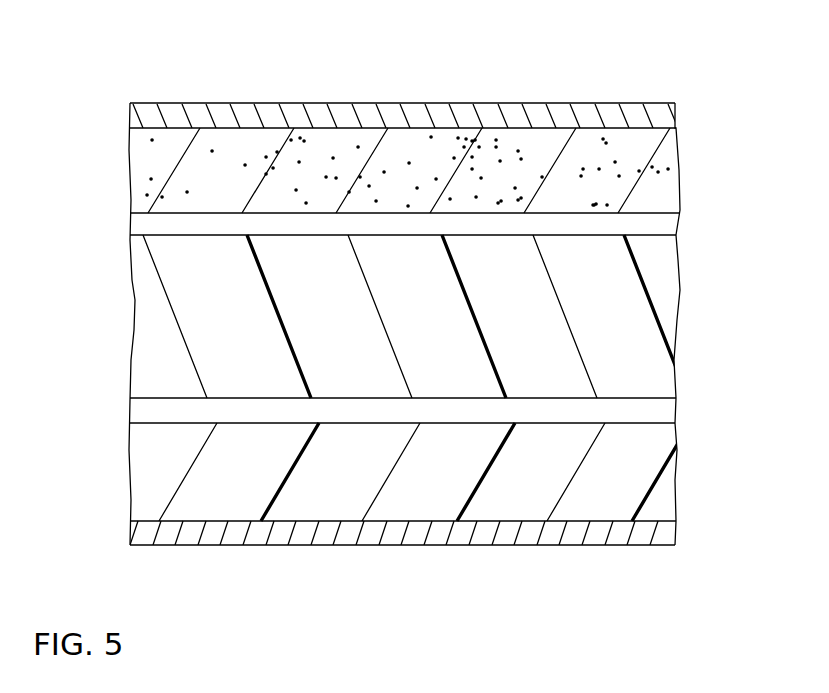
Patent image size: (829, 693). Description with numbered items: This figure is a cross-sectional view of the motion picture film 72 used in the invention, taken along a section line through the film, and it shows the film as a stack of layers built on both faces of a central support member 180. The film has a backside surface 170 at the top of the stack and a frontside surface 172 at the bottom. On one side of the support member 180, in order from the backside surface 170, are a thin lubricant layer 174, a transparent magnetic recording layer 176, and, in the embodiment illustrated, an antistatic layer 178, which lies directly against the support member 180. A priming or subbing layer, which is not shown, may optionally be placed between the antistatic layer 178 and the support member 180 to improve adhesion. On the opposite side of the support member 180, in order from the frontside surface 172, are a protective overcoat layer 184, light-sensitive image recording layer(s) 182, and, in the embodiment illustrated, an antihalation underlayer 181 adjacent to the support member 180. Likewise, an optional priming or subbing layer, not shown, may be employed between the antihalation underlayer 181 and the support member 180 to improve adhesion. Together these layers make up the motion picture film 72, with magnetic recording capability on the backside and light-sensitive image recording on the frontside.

The motion picture film 72 is at (160, 85).
The backside surface 170 is at (630, 105).
The frontside surface 172 is at (605, 547).
The thin lubricant layer 174 is at (660, 117).
The transparent magnetic recording layer 176 is at (660, 183).
The antistatic layer 178 is at (660, 225).
The support member 180 is at (665, 297).
The antihalation underlayer 181 is at (665, 415).
The light-sensitive image recording layer(s) 182 is at (663, 473).
The protective overcoat layer 184 is at (660, 537).